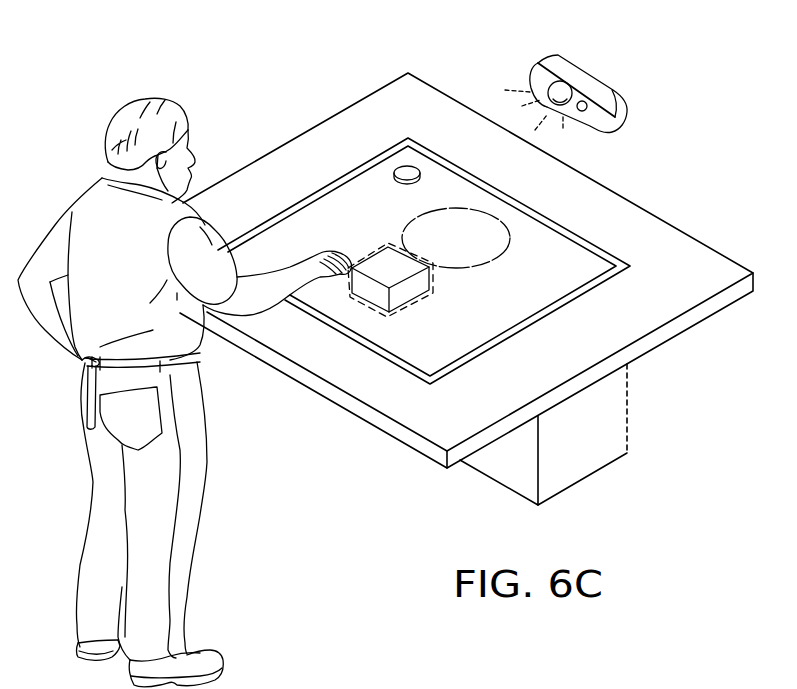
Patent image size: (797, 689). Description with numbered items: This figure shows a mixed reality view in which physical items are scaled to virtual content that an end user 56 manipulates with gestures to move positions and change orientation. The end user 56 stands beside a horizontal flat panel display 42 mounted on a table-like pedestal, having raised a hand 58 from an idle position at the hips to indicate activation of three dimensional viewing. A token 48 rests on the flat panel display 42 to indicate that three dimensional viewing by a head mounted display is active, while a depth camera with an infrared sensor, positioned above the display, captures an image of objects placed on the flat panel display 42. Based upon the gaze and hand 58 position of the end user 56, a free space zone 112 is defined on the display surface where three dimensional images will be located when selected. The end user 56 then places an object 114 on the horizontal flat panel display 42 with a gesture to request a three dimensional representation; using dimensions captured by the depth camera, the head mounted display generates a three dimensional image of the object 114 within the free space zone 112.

The horizontal flat panel display 42 is at (581, 265).
The token 48 is at (400, 165).
The end user 56 is at (118, 112).
The hand 58 is at (322, 252).
The free space zone 112 is at (466, 268).
The object 114 is at (410, 292).